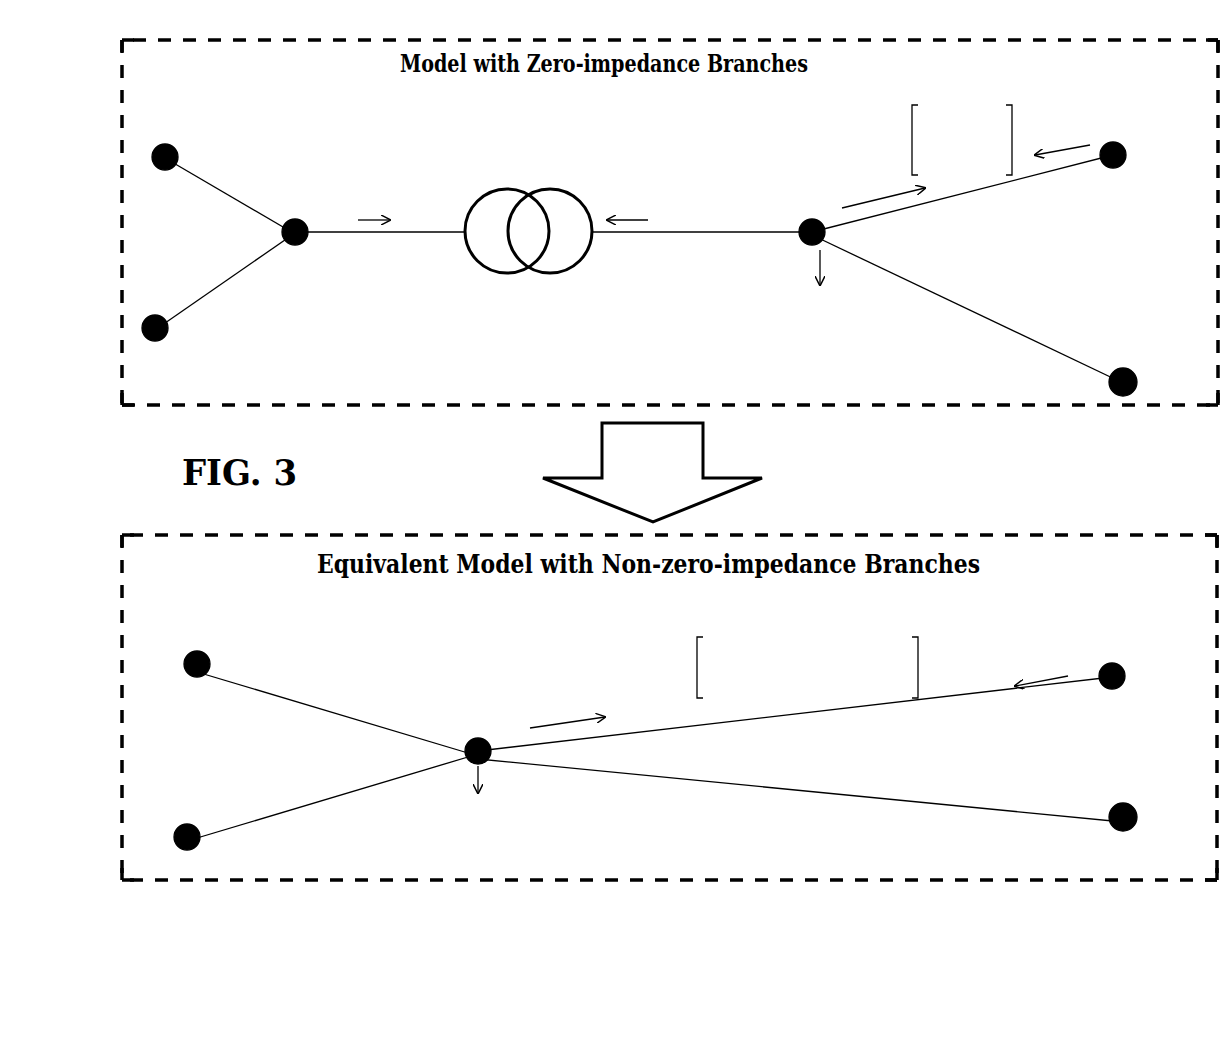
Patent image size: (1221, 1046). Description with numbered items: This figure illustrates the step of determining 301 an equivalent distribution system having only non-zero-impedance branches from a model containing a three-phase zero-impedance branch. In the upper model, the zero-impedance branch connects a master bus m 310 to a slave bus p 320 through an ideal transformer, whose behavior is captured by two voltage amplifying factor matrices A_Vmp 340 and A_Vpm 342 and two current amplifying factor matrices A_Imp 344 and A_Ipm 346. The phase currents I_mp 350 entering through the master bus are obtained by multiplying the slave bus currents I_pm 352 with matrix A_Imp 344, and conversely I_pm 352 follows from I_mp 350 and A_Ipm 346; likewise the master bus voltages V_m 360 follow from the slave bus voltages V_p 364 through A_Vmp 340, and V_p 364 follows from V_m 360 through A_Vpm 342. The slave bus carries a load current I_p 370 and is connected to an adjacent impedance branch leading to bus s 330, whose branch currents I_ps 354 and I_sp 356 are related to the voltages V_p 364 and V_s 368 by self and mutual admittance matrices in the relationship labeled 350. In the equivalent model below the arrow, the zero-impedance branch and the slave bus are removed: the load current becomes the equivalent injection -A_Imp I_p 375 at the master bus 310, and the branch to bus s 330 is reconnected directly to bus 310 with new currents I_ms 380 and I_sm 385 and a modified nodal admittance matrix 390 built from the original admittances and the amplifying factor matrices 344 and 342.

The determining an equivalent distribution system 301 is at (652, 472).
The master bus m 310 is at (302, 215).
The slave bus p 320 is at (808, 217).
The bus s 330 is at (1135, 157).
The voltage amplifying factor matrix A_Vmp 340 is at (485, 300).
The voltage amplifying factor matrix A_Vpm 342 is at (560, 317).
The current amplifying factor matrix A_Imp 344 is at (473, 163).
The current amplifying factor matrix A_Ipm 346 is at (555, 178).
The phase currents I_mp 350 is at (373, 177).
The phase currents I_pm 352 is at (657, 183).
The branch currents I_ps 354 is at (880, 177).
The branch currents I_sp 356 is at (1062, 130).
The master bus voltages V_m 360 is at (235, 243).
The slave bus voltages V_p 364 is at (875, 240).
The bus voltages V_s 368 is at (1133, 192).
The load current I_p 370 is at (862, 298).
The equivalent current injection -A_Imp I_p 375 is at (532, 800).
The branch currents I_ms 380 is at (590, 700).
The branch currents I_sm 385 is at (1068, 650).
The equivalent branch admittance matrix 390 is at (842, 632).